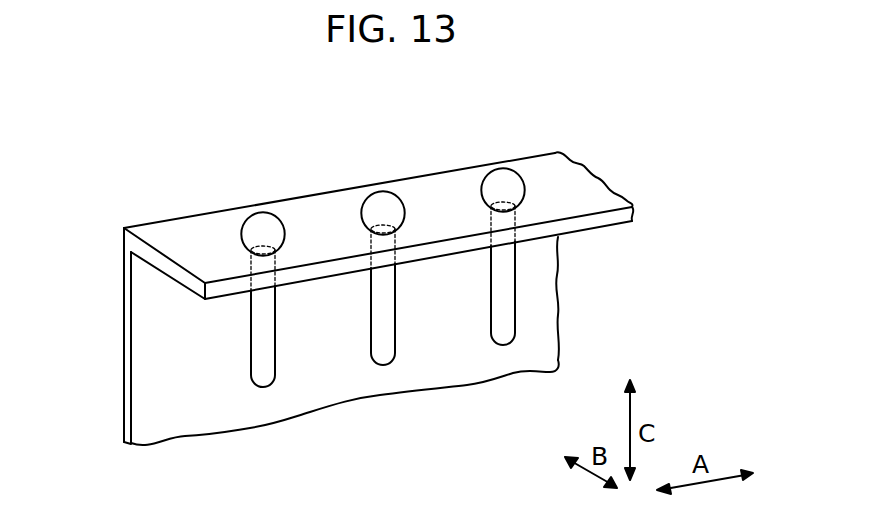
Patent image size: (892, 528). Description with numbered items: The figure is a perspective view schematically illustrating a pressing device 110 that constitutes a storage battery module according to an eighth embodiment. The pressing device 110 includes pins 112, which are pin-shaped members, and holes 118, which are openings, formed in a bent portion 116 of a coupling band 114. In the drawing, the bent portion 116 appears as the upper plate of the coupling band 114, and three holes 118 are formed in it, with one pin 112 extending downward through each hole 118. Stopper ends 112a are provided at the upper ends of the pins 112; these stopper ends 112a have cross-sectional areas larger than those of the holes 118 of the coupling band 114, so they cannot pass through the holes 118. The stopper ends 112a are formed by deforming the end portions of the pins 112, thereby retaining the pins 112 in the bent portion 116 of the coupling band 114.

The pressing device 110 is at (320, 78).
The pin 112 is at (393, 372).
The stopper end 112a is at (382, 199).
The coupling band 114 is at (115, 311).
The bent portion 116 is at (207, 247).
The hole 118 is at (380, 229).